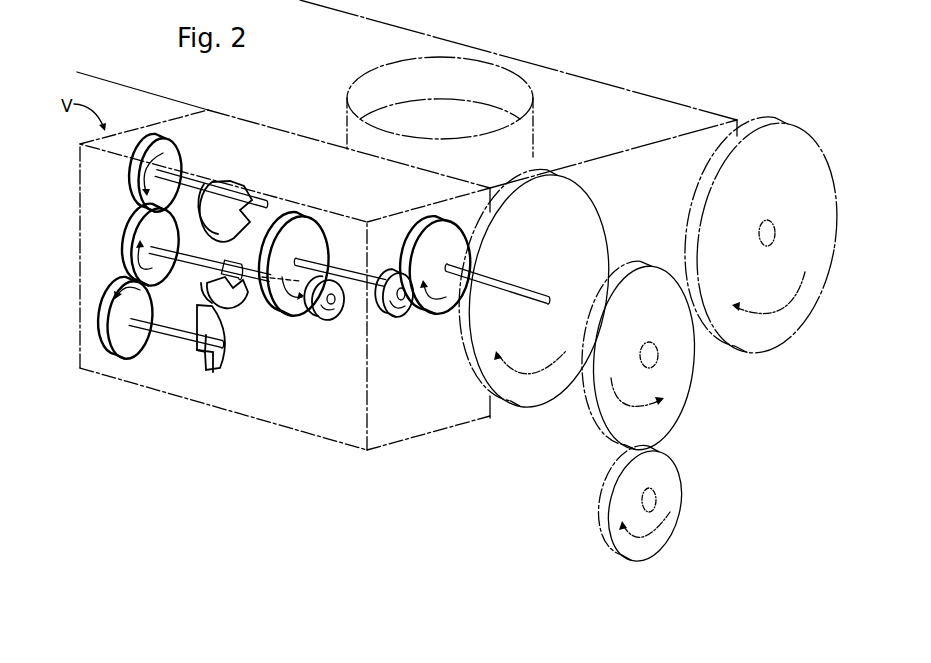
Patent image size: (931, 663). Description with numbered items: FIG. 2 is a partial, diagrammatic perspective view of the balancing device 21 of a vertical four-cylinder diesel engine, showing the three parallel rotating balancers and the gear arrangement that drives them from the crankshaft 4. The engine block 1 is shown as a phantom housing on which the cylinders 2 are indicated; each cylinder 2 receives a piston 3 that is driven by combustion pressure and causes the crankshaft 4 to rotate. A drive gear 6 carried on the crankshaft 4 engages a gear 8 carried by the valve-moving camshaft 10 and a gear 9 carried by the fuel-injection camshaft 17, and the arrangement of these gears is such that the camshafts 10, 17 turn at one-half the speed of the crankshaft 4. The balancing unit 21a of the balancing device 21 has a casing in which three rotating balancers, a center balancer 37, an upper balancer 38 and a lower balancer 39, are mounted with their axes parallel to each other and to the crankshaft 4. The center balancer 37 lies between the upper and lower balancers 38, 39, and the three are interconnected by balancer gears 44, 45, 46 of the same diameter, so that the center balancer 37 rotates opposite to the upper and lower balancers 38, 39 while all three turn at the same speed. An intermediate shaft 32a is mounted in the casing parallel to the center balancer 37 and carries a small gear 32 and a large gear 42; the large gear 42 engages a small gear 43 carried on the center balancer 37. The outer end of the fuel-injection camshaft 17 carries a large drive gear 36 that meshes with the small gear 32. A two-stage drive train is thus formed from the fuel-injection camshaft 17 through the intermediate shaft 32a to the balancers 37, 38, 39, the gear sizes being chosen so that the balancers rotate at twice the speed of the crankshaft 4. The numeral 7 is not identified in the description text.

The engine block 1 is at (610, 82).
The cylinder 2 is at (512, 88).
The piston 3 is at (447, 110).
The crankshaft 4 is at (656, 499).
The drive gear 6 is at (677, 458).
The middle wheel 7 is at (693, 390).
The gear 8 is at (713, 215).
The gear 9 is at (527, 412).
The valve-moving camshaft 10 is at (768, 226).
The fuel-injection camshaft 17 is at (507, 283).
The balancing device 21 is at (80, 265).
The balancing unit 21a is at (192, 406).
The small gear 32 is at (405, 318).
The intermediate shaft 32a is at (342, 278).
The large drive gear 36 is at (457, 246).
The center balancer 37 is at (212, 286).
The upper balancer 38 is at (220, 190).
The lower balancer 39 is at (218, 358).
The large gear 42 is at (292, 305).
The small gear 43 is at (338, 320).
The balancer gear 44 is at (133, 224).
The balancer gear 45 is at (168, 153).
The balancer gear 46 is at (124, 346).